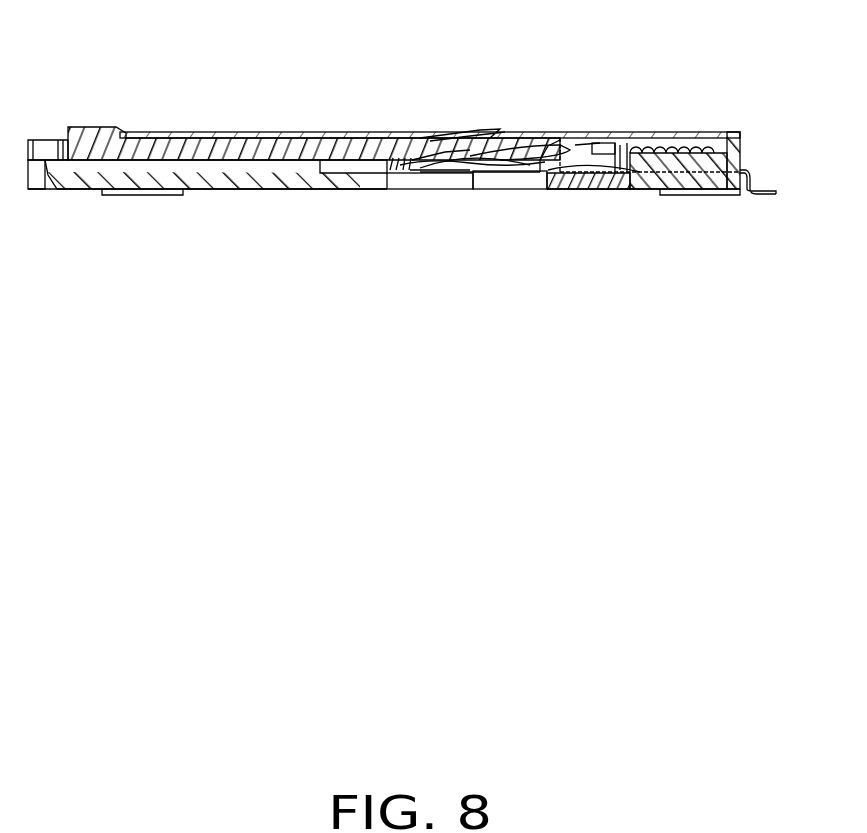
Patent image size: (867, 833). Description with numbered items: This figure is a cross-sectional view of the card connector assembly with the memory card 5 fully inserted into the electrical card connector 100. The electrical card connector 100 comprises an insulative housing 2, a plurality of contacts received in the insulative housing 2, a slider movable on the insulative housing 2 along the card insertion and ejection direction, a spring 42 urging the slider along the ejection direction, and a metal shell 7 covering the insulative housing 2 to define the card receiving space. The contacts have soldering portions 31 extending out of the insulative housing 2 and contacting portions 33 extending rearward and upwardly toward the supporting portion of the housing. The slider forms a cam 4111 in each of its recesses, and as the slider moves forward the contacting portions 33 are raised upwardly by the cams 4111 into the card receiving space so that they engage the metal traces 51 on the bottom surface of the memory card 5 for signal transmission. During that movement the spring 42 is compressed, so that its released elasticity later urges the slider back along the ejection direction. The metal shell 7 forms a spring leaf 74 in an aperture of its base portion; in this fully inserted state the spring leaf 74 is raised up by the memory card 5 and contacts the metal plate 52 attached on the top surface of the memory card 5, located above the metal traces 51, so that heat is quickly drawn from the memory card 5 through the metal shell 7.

The electrical card connector 100 is at (374, 98).
The insulative housing 2 is at (240, 176).
The memory card 5 is at (100, 140).
The metal shell 7 is at (226, 136).
The soldering portion 31 is at (758, 168).
The contacting portion 33 is at (460, 176).
The spring 42 is at (619, 140).
The metal trace 51 is at (535, 176).
The metal plate 52 is at (470, 130).
The spring leaf 74 is at (445, 130).
The cam 4111 is at (415, 180).